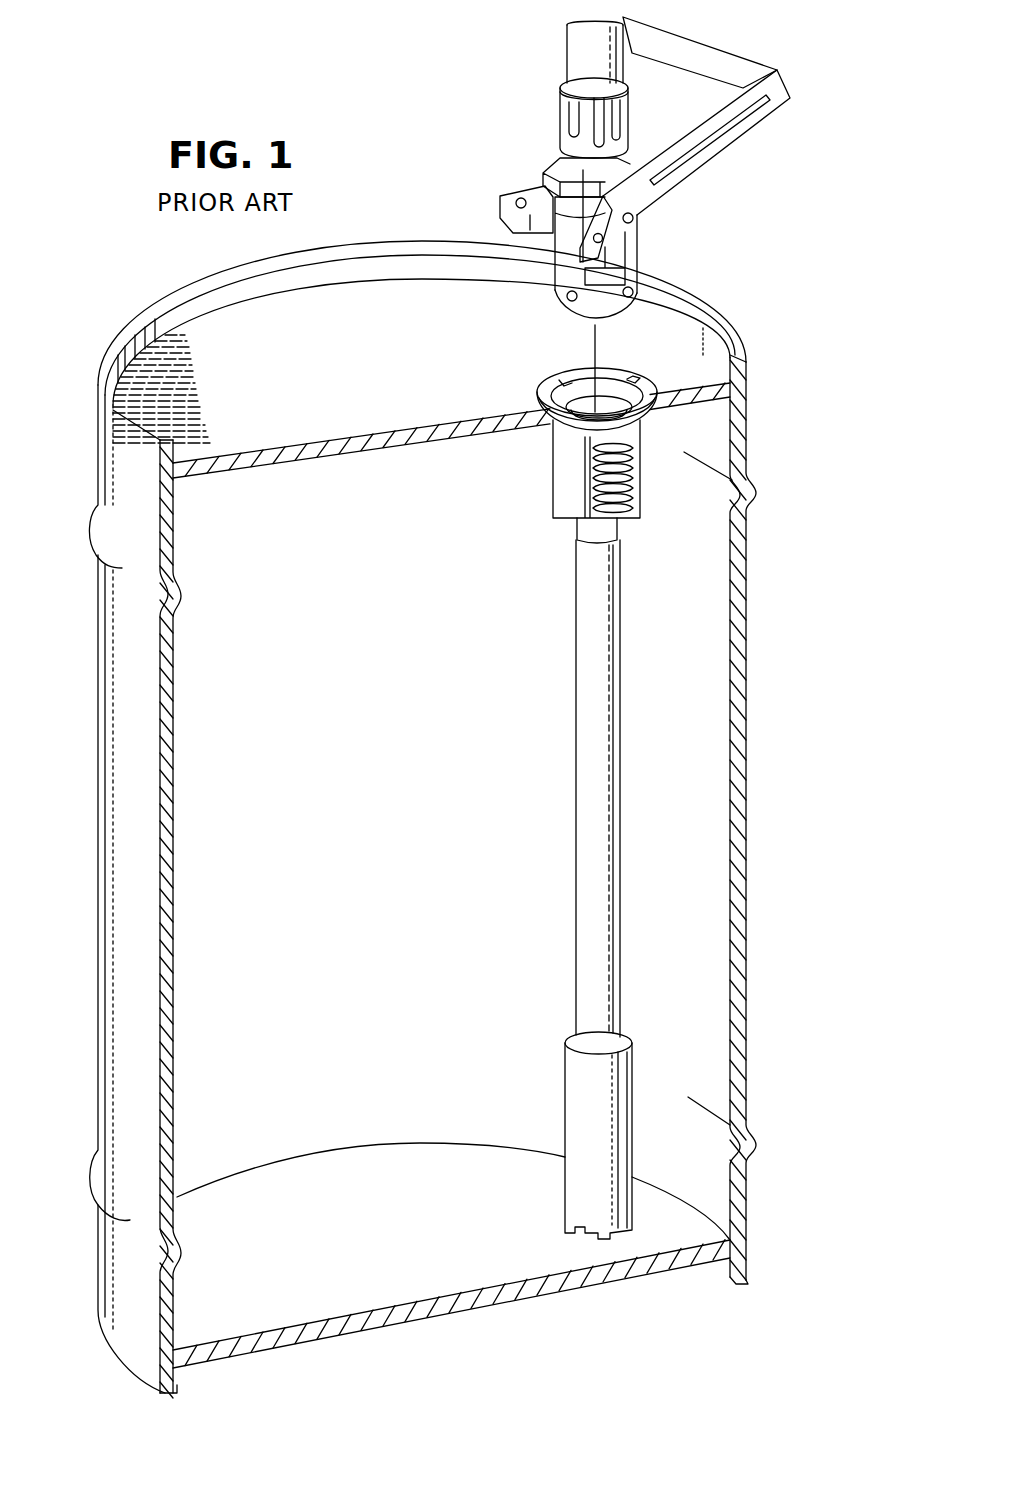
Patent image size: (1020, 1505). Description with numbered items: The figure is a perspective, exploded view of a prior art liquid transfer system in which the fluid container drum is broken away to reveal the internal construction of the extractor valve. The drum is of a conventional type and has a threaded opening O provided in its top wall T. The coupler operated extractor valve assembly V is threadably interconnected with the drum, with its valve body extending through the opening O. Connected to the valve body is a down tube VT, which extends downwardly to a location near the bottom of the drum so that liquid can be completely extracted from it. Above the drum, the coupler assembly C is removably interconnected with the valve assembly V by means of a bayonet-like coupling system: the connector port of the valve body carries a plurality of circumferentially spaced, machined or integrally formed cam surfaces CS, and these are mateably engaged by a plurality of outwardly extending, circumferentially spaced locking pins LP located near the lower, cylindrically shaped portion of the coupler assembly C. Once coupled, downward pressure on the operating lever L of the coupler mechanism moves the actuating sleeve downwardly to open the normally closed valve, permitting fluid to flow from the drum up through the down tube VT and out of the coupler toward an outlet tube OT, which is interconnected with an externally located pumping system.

The outlet tube OT is at (583, 60).
The operating lever L is at (750, 134).
The coupler assembly C is at (645, 237).
The locking pins LP is at (647, 298).
The cam surfaces CS is at (567, 383).
The threaded opening O is at (543, 421).
The top wall T is at (421, 406).
The extractor valve assembly V is at (568, 533).
The down tube VT is at (590, 831).